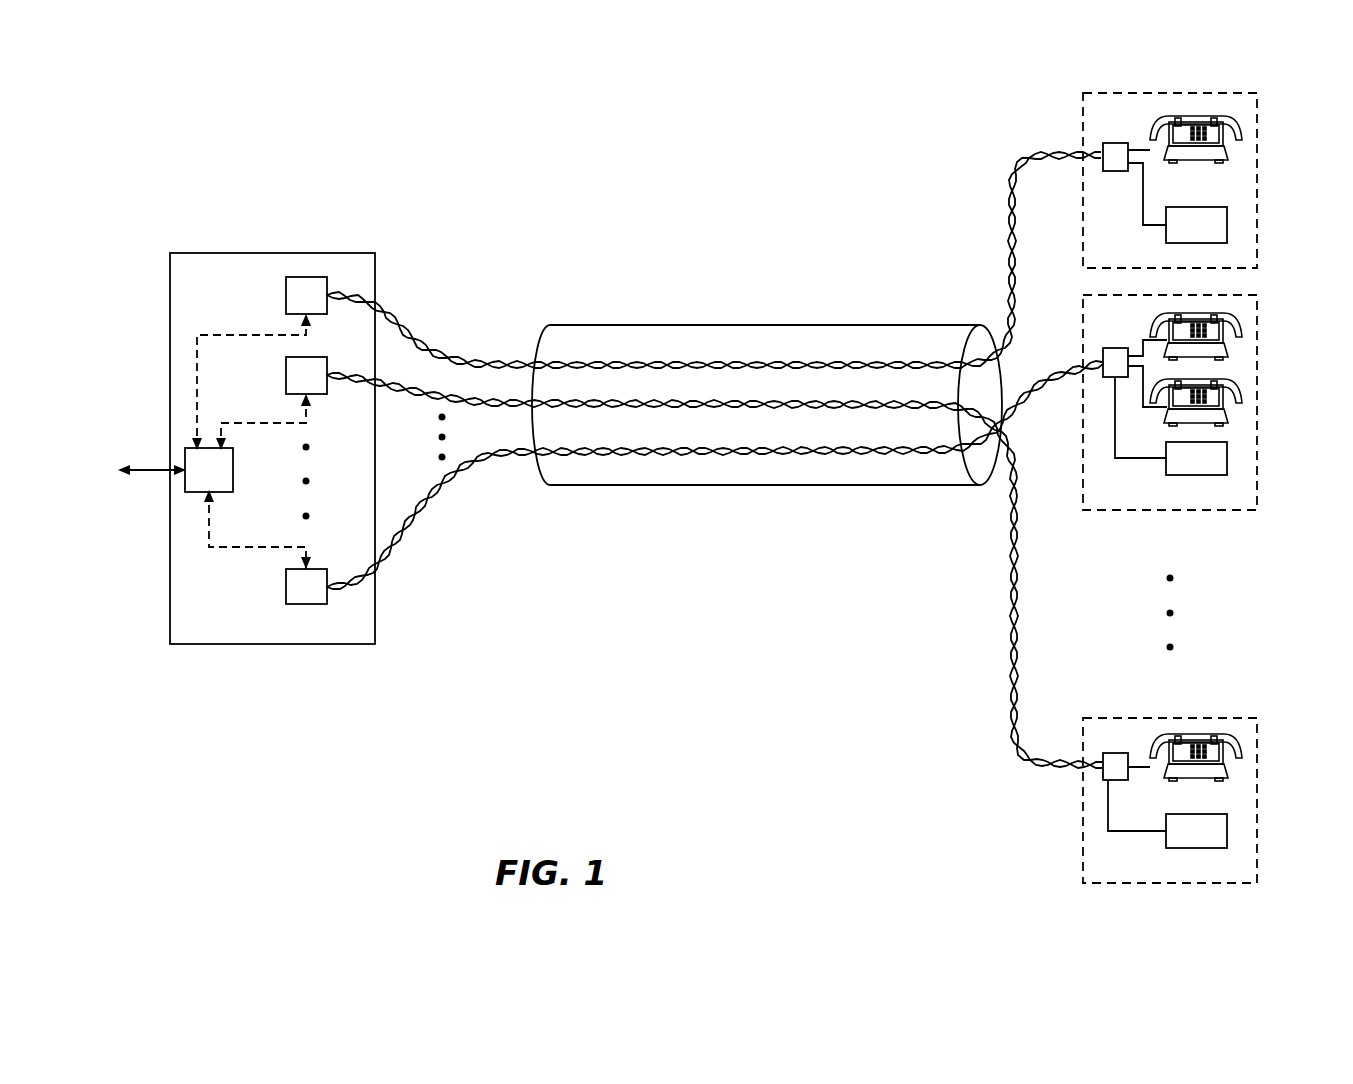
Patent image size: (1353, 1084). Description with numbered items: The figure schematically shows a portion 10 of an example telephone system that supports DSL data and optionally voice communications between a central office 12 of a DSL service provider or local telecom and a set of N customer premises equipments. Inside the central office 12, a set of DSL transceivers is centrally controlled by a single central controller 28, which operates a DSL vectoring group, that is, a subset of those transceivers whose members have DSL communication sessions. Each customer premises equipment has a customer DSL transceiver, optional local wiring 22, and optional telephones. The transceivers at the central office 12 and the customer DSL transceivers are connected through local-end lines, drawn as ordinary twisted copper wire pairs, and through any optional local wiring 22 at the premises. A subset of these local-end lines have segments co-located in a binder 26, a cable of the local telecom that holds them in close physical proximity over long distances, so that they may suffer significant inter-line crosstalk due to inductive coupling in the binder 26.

The portion of telephone system 10 is at (645, 160).
The central office 12 is at (208, 637).
The local wiring 22 is at (1093, 190).
The binder 26 is at (780, 323).
The central controller 28 is at (197, 482).